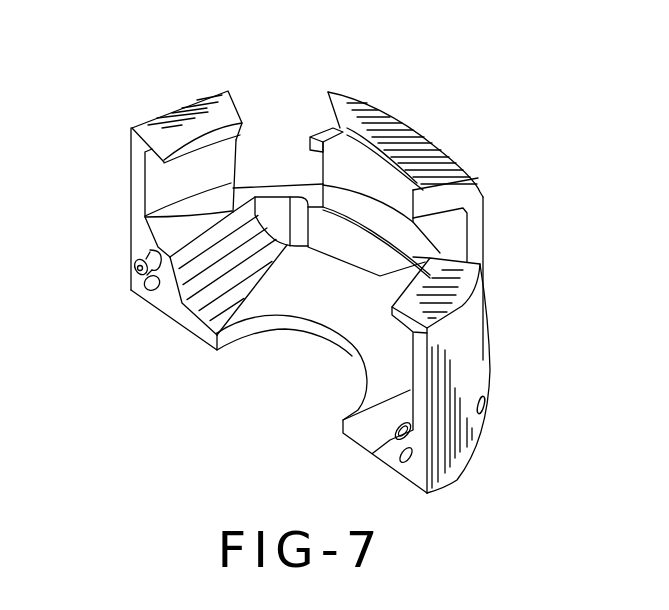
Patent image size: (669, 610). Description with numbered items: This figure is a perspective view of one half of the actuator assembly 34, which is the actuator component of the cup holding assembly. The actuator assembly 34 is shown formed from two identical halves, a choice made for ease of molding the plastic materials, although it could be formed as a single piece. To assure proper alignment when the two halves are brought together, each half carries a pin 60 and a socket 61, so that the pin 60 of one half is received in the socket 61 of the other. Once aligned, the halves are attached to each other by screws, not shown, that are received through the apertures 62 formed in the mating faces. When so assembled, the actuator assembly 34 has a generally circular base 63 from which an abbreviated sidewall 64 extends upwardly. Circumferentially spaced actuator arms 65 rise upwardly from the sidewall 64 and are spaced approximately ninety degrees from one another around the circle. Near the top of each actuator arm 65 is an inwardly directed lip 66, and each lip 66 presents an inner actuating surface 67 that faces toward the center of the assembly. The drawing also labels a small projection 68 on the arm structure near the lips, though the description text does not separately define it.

The actuator assembly 34 is at (64, 112).
The pin 60 is at (140, 260).
The socket 61 is at (397, 440).
The apertures 62 is at (153, 277).
The base 63 is at (378, 349).
The sidewall 64 is at (350, 248).
The actuator arms 65 is at (160, 176).
The lip 66 is at (168, 127).
The inner actuating surface 67 is at (202, 138).
The tab 68 is at (318, 133).